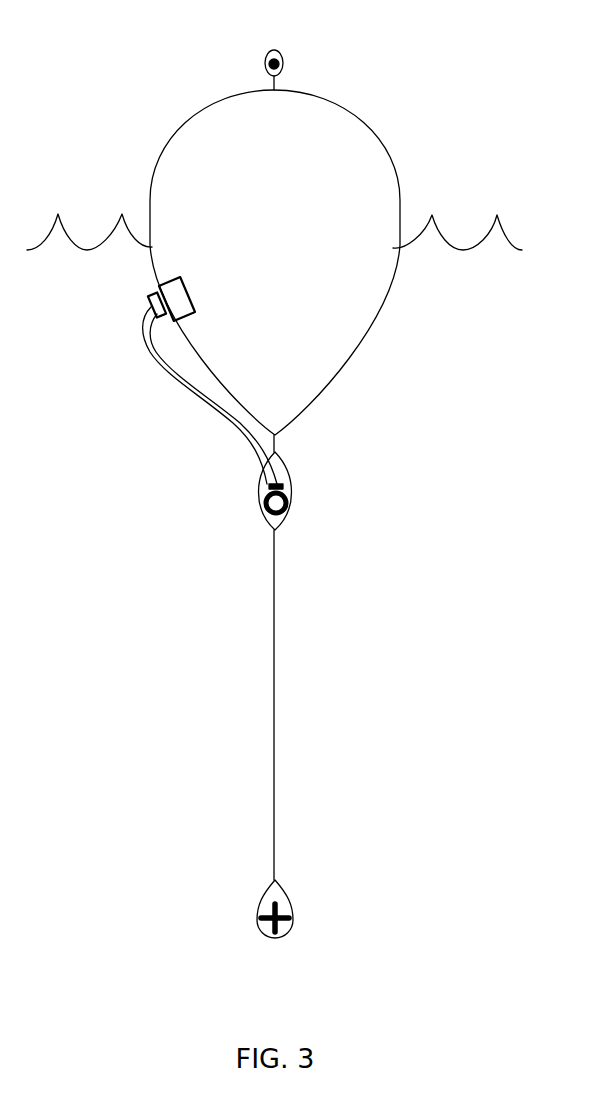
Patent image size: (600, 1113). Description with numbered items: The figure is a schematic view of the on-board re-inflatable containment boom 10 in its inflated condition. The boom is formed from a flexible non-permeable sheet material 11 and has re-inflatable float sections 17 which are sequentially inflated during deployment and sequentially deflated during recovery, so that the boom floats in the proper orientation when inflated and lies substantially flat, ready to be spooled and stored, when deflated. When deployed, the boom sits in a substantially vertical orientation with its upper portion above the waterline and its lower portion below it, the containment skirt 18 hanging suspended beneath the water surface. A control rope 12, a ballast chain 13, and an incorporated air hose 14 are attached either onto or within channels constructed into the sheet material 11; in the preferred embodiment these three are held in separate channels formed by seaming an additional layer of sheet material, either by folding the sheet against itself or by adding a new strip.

The on-board re-inflatable containment boom 10 is at (118, 80).
The flexible non-permeable sheet material 11 is at (274, 637).
The control rope 12 is at (282, 62).
The ballast chain 13 is at (285, 910).
The incorporated air hose 14 is at (270, 504).
The re-inflatable float sections 17 is at (398, 128).
The containment skirt 18 is at (322, 682).